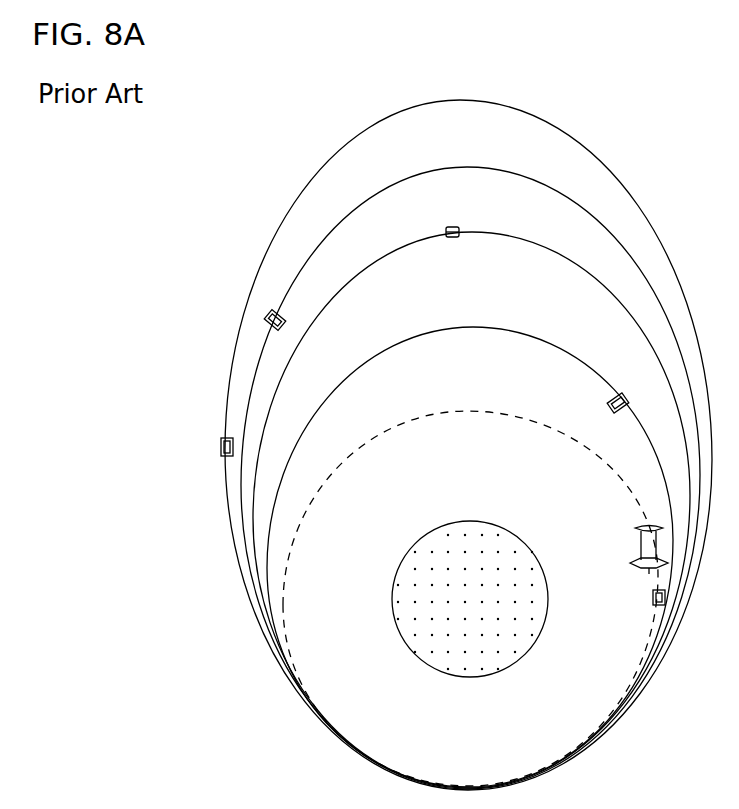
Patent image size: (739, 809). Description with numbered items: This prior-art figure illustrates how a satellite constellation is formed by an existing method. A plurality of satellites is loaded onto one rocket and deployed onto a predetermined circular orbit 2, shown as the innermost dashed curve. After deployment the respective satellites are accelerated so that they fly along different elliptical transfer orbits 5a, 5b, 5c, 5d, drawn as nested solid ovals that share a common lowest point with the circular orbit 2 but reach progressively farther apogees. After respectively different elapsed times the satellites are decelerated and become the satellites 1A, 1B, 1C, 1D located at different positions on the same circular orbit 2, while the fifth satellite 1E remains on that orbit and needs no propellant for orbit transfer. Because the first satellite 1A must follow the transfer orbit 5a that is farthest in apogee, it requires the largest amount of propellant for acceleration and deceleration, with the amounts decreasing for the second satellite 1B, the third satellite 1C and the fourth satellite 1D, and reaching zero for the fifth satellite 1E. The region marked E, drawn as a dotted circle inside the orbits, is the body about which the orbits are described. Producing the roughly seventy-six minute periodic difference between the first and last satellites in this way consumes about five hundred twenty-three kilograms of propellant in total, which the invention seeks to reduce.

The transfer orbit 5a is at (462, 101).
The transfer orbit 5b is at (473, 169).
The transfer orbit 5c is at (502, 234).
The transfer orbit 5d is at (466, 329).
The circular orbit 2 is at (479, 413).
The first satellite 1A is at (220, 449).
The second satellite 1B is at (270, 314).
The third satellite 1C is at (451, 240).
The fourth satellite 1D is at (612, 406).
The fifth satellite 1E is at (652, 602).
The dotted circular region E is at (470, 599).